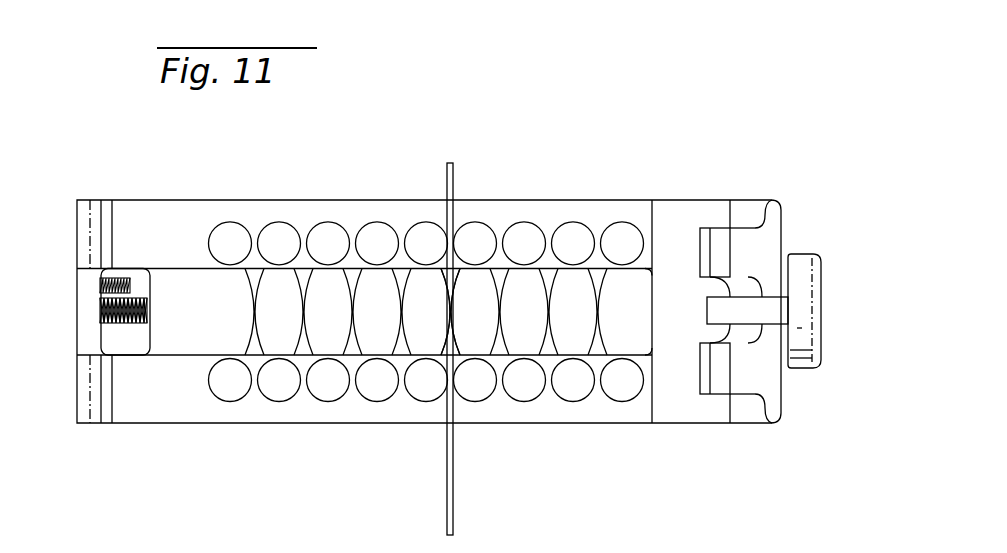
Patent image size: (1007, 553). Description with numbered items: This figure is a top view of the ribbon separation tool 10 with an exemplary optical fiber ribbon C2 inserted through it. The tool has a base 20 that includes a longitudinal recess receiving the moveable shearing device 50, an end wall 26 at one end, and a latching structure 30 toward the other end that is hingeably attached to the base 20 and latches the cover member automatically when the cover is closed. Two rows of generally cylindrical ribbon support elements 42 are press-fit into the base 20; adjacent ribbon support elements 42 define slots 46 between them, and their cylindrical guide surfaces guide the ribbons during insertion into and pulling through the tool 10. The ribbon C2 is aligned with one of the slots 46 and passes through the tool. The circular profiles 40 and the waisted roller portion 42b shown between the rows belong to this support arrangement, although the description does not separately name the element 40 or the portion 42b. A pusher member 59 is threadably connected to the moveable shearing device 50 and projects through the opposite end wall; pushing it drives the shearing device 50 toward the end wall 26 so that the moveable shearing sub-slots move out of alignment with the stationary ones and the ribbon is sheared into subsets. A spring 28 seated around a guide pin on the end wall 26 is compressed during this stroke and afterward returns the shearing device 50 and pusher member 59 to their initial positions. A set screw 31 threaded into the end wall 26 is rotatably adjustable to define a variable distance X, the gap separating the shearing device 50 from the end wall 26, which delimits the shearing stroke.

The ribbon separation tool 10 is at (168, 180).
The variable distance X is at (142, 283).
The base 20 is at (583, 199).
The end wall 26 is at (102, 335).
The spring 28 is at (102, 320).
The set screw 31 is at (100, 290).
The moveable shearing device 50 is at (159, 305).
The balls 40 is at (226, 226).
The ribbon support elements 42 is at (425, 230).
The roller waist 42b is at (447, 232).
The slots 46 is at (455, 223).
The optical fiber ribbon C2 is at (455, 178).
The latching structure 30 is at (737, 242).
The pusher member 59 is at (803, 270).